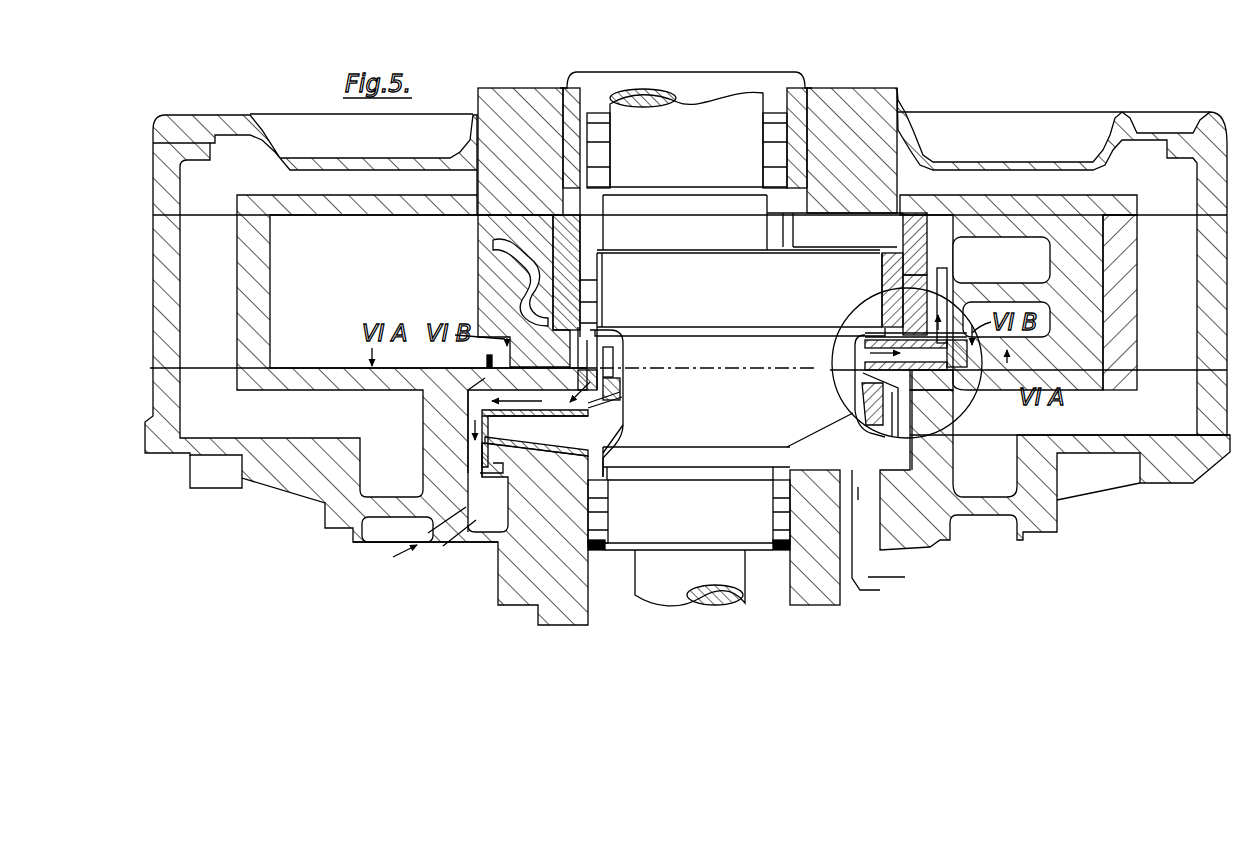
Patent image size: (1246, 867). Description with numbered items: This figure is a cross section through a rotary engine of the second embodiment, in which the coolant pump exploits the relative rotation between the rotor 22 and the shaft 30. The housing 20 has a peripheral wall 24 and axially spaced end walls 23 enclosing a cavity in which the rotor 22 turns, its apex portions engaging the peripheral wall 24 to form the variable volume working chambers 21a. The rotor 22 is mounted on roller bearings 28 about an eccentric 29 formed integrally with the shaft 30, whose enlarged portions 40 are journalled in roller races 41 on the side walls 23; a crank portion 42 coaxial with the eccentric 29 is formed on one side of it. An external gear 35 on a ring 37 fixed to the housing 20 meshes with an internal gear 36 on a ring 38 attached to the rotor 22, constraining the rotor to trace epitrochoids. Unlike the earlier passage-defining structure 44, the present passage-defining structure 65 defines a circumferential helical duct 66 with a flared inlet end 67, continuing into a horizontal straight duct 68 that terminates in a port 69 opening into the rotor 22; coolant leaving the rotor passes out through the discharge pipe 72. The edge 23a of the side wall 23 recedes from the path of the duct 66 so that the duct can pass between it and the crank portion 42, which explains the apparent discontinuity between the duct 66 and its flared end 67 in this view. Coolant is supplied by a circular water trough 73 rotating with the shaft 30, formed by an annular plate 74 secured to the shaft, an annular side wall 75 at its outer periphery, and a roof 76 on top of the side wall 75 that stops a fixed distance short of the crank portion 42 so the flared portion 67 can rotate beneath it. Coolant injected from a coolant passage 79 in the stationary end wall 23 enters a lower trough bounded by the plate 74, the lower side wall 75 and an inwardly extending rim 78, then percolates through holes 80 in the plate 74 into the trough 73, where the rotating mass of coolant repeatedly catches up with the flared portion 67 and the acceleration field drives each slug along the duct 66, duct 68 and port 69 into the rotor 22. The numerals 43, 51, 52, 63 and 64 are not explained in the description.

The housing 20 is at (1226, 148).
The working chambers 21a is at (363, 271).
The rotor 22 is at (1083, 287).
The end walls 23 is at (862, 120).
The edge of the side wall 23a is at (917, 375).
The peripheral wall 24 is at (270, 272).
The roller bearings 28 is at (592, 293).
The eccentric 29 is at (736, 333).
The shaft 30 is at (690, 578).
The gear 35 is at (795, 234).
The gear 36 is at (898, 232).
The ring 37 is at (575, 182).
The ring 38 is at (907, 240).
The enlarged portions of the shaft 40 is at (686, 138).
The roller races 41 is at (770, 135).
The crank portion 42 is at (728, 433).
The seal element 43 is at (507, 337).
The passage-defining structure 44 is at (523, 323).
The passage 51 is at (947, 280).
The chamber 52 is at (1001, 260).
The bore 63 is at (480, 530).
The passage 64 is at (453, 540).
The passage-defining structure 65 is at (605, 332).
The duct 66 is at (615, 358).
The flared inlet end 67 is at (862, 345).
The horizontal straight duct 68 is at (913, 352).
The port 69 is at (960, 330).
The discharge pipe 72 is at (588, 381).
The water trough 73 is at (475, 438).
The annular plate 74 is at (557, 447).
The annular side wall 75 is at (474, 452).
The roof 76 is at (535, 429).
The inwardly extending rim 78 is at (503, 477).
The coolant passage 79 is at (847, 484).
The through holes 80 is at (535, 438).